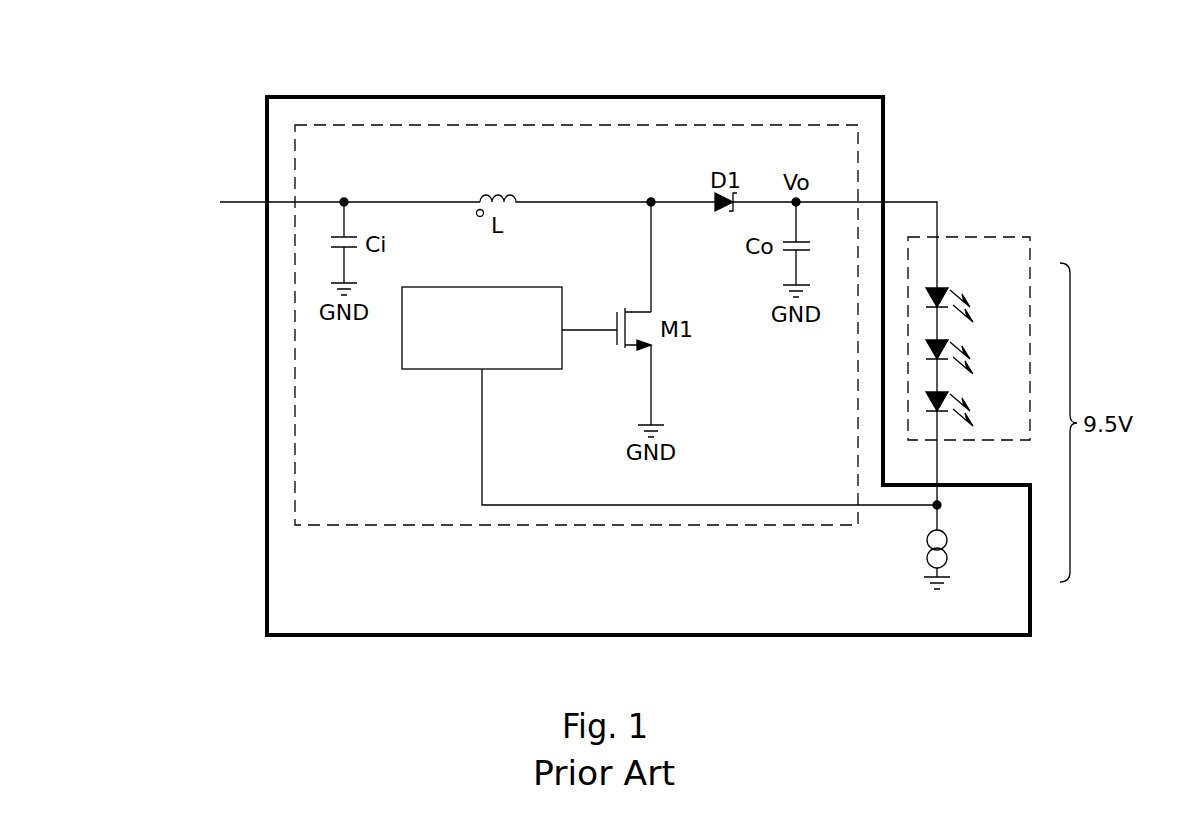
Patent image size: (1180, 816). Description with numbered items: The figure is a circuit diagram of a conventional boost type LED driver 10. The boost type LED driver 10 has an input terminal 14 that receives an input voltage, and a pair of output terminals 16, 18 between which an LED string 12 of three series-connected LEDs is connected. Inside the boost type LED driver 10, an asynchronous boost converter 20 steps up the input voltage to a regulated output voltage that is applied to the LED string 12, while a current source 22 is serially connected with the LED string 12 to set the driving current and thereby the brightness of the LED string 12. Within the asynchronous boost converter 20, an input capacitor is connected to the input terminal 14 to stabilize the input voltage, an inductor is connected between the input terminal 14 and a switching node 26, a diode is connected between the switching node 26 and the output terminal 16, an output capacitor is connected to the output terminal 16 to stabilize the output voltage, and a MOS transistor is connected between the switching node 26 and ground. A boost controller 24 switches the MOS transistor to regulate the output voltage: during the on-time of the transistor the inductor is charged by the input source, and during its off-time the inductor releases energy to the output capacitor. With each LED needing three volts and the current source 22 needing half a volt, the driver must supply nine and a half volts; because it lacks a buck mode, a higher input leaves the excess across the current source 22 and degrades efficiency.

The boost type LED driver 10 is at (573, 97).
The LED string 12 is at (993, 236).
The input terminal 14 is at (243, 200).
The output terminal 16 is at (903, 203).
The output terminal 18 is at (937, 466).
The asynchronous boost converter 20 is at (582, 525).
The current source 22 is at (927, 550).
The boost controller 24 is at (440, 372).
The switching node 26 is at (650, 199).